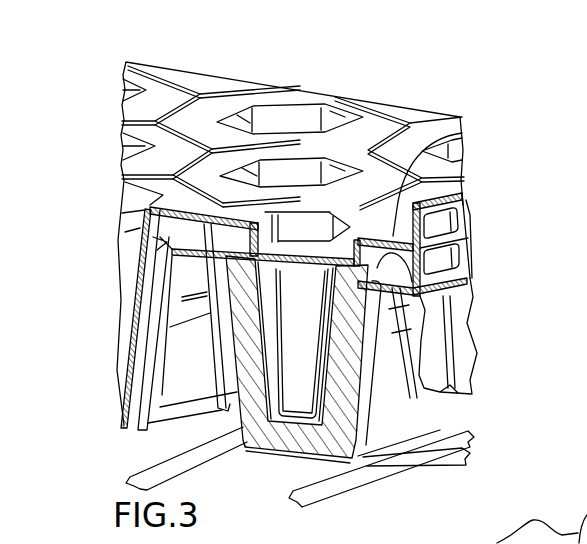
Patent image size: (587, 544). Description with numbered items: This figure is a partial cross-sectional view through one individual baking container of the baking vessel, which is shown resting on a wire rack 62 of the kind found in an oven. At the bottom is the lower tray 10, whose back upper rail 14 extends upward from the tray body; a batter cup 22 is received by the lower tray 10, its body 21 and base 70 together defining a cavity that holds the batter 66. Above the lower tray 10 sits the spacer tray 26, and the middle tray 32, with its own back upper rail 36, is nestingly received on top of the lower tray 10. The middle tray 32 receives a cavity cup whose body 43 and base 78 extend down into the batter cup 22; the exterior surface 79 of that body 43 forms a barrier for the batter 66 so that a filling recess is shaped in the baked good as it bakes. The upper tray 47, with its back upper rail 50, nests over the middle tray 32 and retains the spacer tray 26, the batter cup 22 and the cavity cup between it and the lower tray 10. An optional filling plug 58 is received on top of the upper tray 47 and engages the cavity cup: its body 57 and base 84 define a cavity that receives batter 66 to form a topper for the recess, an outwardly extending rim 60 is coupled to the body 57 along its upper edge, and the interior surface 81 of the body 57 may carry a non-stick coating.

The lower tray 10 is at (445, 315).
The back upper rail 14 is at (463, 227).
The body 21 is at (360, 373).
The batter cup 22 is at (283, 457).
The spacer tray 26 is at (220, 206).
The middle tray 32 is at (455, 268).
The back upper rail 36 is at (464, 215).
The body 43 is at (245, 338).
The upper tray 47 is at (450, 252).
The back upper rail 50 is at (462, 208).
The body 57 is at (223, 262).
The filling plug 58 is at (466, 137).
The rim 60 is at (460, 196).
The wire rack 62 is at (183, 460).
The batter 66 is at (247, 395).
The base 70 is at (312, 458).
The base 78 is at (313, 444).
The exterior surface 79 is at (258, 360).
The interior surface 81 is at (283, 228).
The base 84 is at (298, 268).